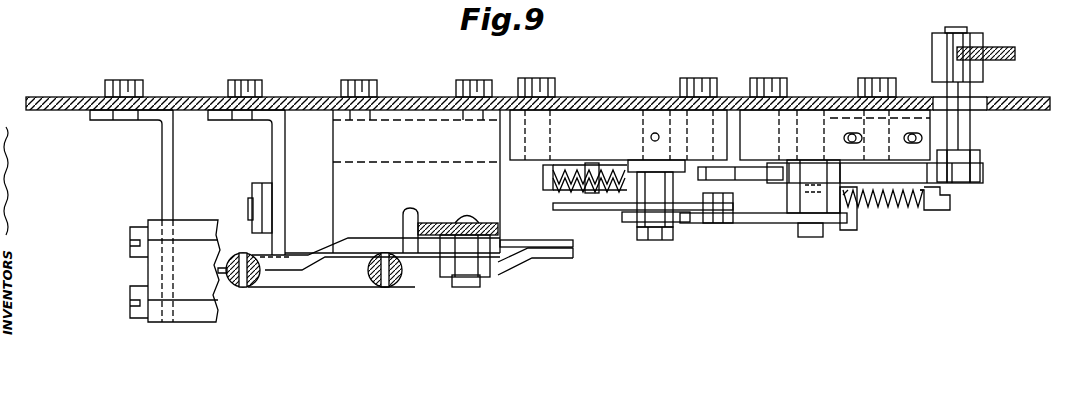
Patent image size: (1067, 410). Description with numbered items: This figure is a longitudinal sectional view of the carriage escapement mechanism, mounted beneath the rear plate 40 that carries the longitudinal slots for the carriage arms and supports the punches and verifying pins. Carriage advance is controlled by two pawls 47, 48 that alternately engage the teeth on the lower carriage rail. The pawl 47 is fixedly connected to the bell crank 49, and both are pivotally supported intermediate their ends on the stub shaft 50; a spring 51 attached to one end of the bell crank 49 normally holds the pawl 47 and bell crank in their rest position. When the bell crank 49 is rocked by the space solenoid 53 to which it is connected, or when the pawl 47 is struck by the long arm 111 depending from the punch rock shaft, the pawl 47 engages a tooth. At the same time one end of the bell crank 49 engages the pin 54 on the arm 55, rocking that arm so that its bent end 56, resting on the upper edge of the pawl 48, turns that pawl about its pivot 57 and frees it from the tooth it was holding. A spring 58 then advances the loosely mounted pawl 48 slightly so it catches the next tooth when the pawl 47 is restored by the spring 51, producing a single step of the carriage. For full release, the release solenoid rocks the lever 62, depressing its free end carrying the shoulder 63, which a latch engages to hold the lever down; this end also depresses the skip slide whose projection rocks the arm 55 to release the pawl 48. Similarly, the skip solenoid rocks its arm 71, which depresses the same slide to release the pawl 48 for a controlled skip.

The rear plate 40 is at (610, 100).
The pawl 47 is at (713, 175).
The pawl 48 is at (550, 163).
The bell crank 49 is at (772, 222).
The stub shaft 50 is at (815, 235).
The spring 51 is at (907, 200).
The space solenoid 53 is at (315, 172).
The pin 54 is at (717, 222).
The arm 55 is at (697, 210).
The bent end 56 is at (591, 163).
The pivot 57 is at (663, 242).
The spring 58 is at (627, 222).
The lever 62 is at (365, 243).
The shoulder 63 is at (547, 247).
The arm 71 is at (512, 268).
The long arm 111 is at (1015, 47).